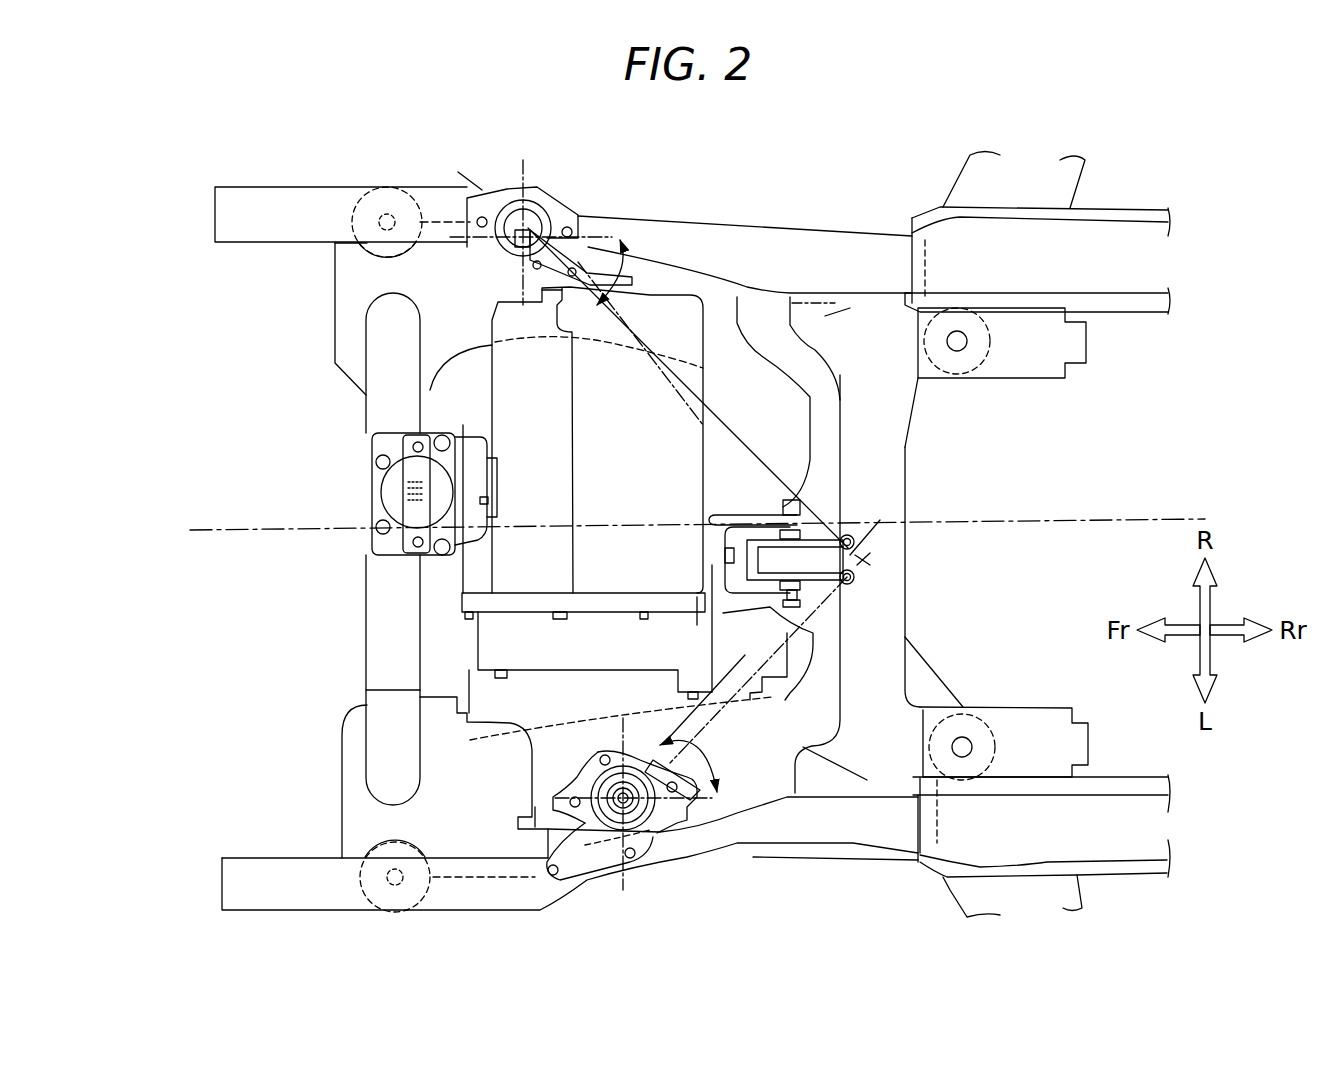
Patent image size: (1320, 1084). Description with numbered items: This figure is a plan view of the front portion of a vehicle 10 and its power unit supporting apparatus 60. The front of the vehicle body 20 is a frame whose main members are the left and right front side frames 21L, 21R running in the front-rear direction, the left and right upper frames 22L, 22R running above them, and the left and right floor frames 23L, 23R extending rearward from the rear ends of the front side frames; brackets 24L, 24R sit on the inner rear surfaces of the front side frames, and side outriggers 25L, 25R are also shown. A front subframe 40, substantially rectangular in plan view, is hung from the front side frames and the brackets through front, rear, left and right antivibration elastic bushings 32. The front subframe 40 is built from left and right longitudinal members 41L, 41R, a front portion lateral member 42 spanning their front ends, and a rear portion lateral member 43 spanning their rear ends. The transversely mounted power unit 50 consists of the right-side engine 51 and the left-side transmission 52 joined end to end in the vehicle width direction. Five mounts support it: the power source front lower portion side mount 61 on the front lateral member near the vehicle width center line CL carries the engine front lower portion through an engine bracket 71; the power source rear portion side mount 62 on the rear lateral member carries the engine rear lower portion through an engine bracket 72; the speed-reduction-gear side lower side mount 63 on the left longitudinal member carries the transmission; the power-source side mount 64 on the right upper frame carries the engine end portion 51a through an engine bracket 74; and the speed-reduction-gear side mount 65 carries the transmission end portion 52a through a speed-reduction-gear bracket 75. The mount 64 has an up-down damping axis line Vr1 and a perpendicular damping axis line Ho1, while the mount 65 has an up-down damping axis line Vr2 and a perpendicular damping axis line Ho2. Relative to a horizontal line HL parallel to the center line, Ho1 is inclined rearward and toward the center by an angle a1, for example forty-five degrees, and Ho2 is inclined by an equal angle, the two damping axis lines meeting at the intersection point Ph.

The vehicle 10 is at (188, 420).
The vehicle body 20 is at (205, 178).
The right front side frame 21R is at (312, 210).
The right upper frame 22R is at (215, 238).
The left front side frame 21L is at (482, 876).
The left upper frame 22L is at (232, 886).
The right floor frame 23R is at (1125, 287).
The left floor frame 23L is at (1113, 807).
The right bracket 24R is at (1045, 370).
The left bracket 24L is at (1023, 717).
The right side outrigger 25R is at (1068, 172).
The left side outrigger 25L is at (1082, 898).
The antivibration elastic bushing 32 is at (368, 250).
The front subframe 40 is at (333, 342).
The right longitudinal member 41R is at (713, 293).
The left longitudinal member 41L is at (500, 842).
The front portion lateral member 42 is at (380, 420).
The rear portion lateral member 43 is at (905, 487).
The power unit 50 is at (483, 619).
The engine 51 is at (504, 451).
The end portion of the engine 51a is at (538, 288).
The transmission 52 is at (507, 760).
The end portion of the transmission 52a is at (557, 810).
The power unit supporting apparatus 60 is at (340, 492).
The power source front lower portion side mount 61 is at (357, 500).
The power source rear portion side mount 62 is at (812, 580).
The speed-reduction-gear side lower side mount 63 is at (583, 840).
The power-source side mount 64 is at (530, 205).
The speed-reduction-gear side mount 65 is at (655, 832).
The engine bracket 71 is at (467, 467).
The engine bracket 72 is at (737, 513).
The engine bracket 74 is at (584, 240).
The speed-reduction-gear bracket 75 is at (680, 822).
The horizontal line HL is at (606, 238).
The damping axis line Ho1 is at (667, 373).
The damping axis line Ho2 is at (770, 648).
The damping axis line Vr1 is at (533, 276).
The damping axis line Vr2 is at (623, 735).
The intersection point Ph is at (853, 582).
The vehicle width center line CL is at (1148, 518).
The angle of inclination a1 is at (612, 298).